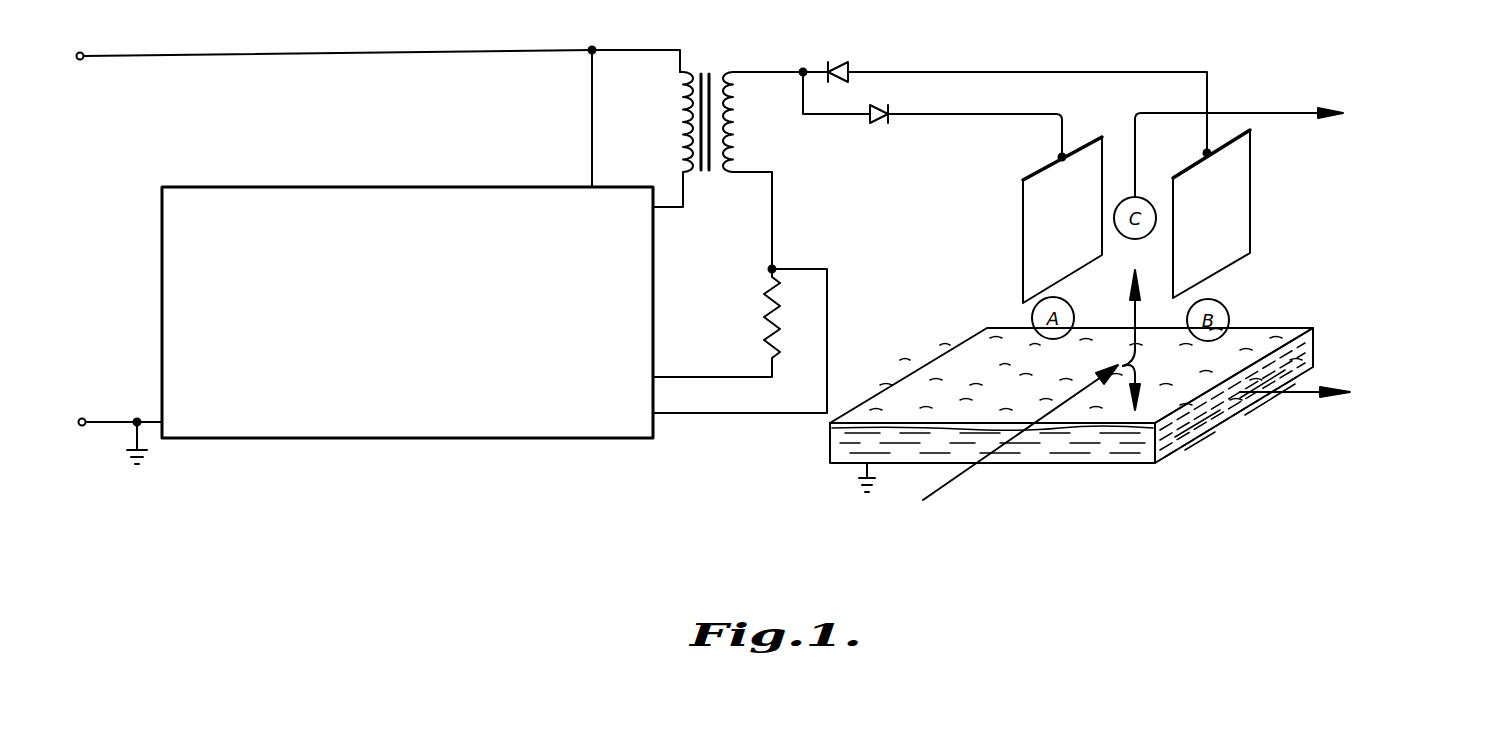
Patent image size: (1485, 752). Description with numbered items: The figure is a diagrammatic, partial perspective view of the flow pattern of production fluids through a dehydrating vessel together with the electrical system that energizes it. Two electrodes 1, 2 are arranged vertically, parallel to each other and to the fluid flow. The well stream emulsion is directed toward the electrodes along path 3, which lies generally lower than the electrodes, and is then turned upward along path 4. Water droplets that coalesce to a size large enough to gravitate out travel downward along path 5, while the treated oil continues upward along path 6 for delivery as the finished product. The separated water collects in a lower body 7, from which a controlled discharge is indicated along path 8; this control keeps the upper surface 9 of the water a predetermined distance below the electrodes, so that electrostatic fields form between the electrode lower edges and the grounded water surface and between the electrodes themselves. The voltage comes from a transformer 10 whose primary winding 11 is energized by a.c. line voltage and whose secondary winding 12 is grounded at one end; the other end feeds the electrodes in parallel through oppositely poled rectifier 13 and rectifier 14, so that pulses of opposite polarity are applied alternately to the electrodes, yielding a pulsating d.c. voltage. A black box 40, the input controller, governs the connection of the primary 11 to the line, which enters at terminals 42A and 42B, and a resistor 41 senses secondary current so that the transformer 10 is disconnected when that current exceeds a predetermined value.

The electrode 1 is at (1023, 212).
The electrode 2 is at (1250, 186).
The emulsion path 3 is at (963, 472).
The upward flow path 4 is at (1132, 311).
The water droplet path 5 is at (1140, 368).
The oil path 6 is at (1137, 158).
The lower body 7 is at (1310, 348).
The water discharge path 8 is at (1307, 394).
The upper surface 9 is at (1260, 330).
The transformer 10 is at (656, 140).
The primary winding 11 is at (682, 121).
The secondary winding 12 is at (763, 170).
The rectifier 13 is at (839, 61).
The rectifier 14 is at (879, 124).
The black box 40 is at (700, 306).
The resistor 41 is at (781, 320).
The input terminal 42A is at (379, 110).
The input terminal 42B is at (121, 432).